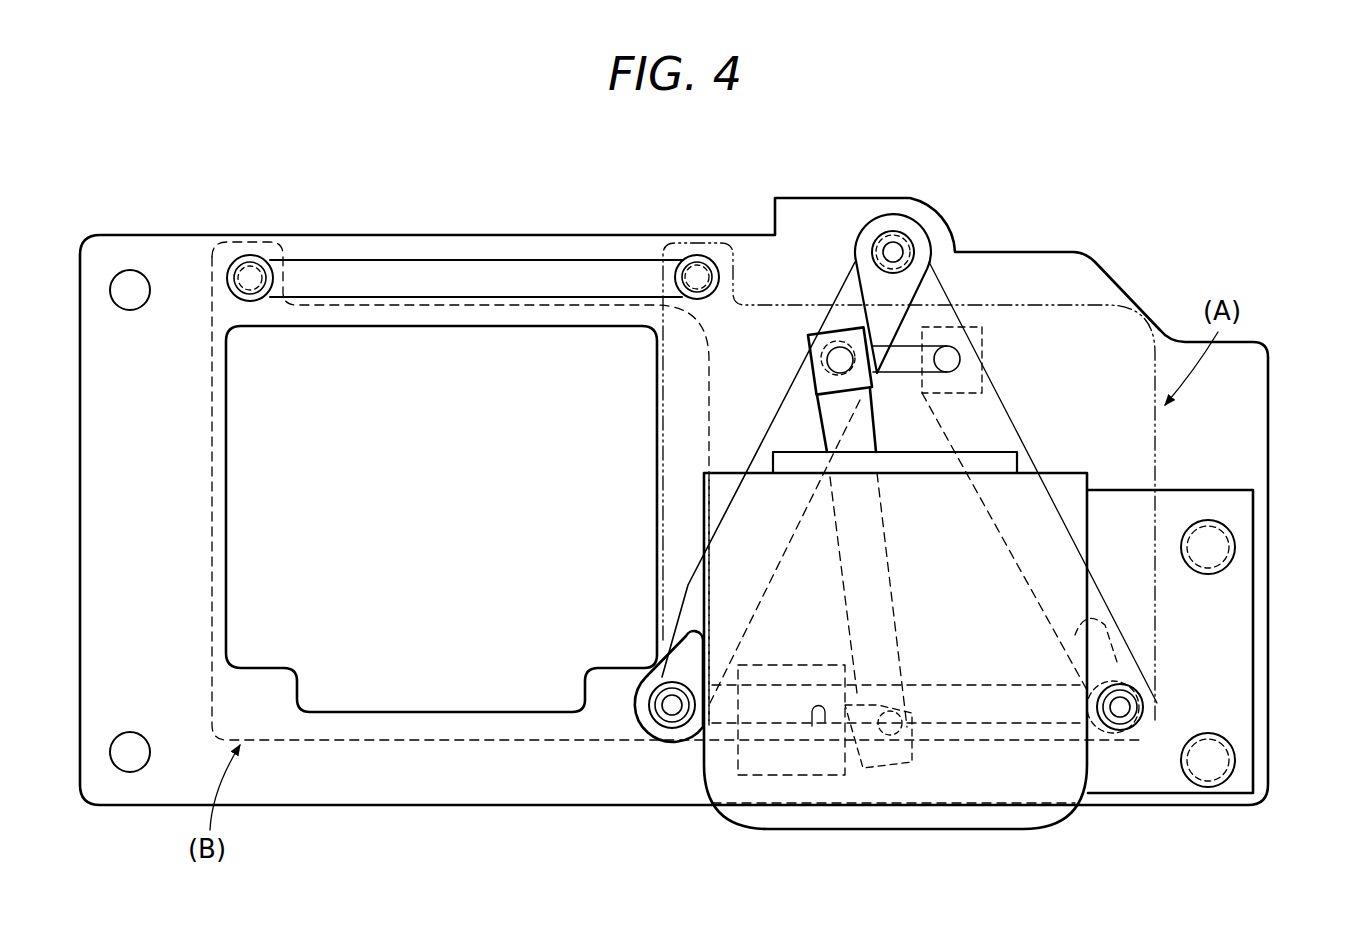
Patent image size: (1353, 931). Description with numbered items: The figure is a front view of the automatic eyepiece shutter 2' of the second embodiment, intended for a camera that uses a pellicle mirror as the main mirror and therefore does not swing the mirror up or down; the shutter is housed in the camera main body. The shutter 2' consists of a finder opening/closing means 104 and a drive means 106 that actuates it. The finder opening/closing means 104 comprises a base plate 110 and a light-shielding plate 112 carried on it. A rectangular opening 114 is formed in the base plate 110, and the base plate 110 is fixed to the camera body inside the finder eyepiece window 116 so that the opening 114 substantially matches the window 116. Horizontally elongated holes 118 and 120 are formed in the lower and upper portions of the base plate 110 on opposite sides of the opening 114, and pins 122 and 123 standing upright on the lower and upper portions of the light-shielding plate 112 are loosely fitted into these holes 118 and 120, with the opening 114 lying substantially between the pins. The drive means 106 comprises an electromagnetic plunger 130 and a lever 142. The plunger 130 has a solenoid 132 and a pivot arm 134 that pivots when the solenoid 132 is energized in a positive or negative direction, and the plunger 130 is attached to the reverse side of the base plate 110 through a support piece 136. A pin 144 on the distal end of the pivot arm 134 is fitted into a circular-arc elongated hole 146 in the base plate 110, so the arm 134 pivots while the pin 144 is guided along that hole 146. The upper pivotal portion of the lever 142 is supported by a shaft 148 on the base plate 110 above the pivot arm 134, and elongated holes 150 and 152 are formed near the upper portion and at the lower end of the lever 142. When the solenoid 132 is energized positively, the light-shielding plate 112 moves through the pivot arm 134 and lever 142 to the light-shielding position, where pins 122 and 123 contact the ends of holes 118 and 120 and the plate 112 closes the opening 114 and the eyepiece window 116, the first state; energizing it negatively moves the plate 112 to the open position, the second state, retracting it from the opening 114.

The automatic eyepiece shutter 2' is at (906, 432).
The finder opening/closing means 104 is at (1040, 277).
The drive means 106 is at (1065, 405).
The base plate 110 is at (1255, 438).
The light-shielding plate 112 is at (440, 303).
The rectangular opening 114 is at (233, 548).
The finder eyepiece window 116 is at (233, 474).
The elongated hole 118 is at (825, 722).
The elongated hole 120 is at (378, 262).
The pin 122 is at (672, 712).
The pin 123 is at (252, 268).
The electromagnetic plunger 130 is at (1058, 828).
The solenoid 132 is at (768, 775).
The pivot arm 134 is at (878, 422).
The support piece 136 is at (1150, 793).
The lever 142 is at (763, 430).
The pin 144 is at (810, 337).
The circular-arc elongated hole 146 is at (873, 420).
The shaft 148 is at (893, 252).
The elongated hole 150 is at (832, 328).
The elongated hole 152 is at (683, 652).